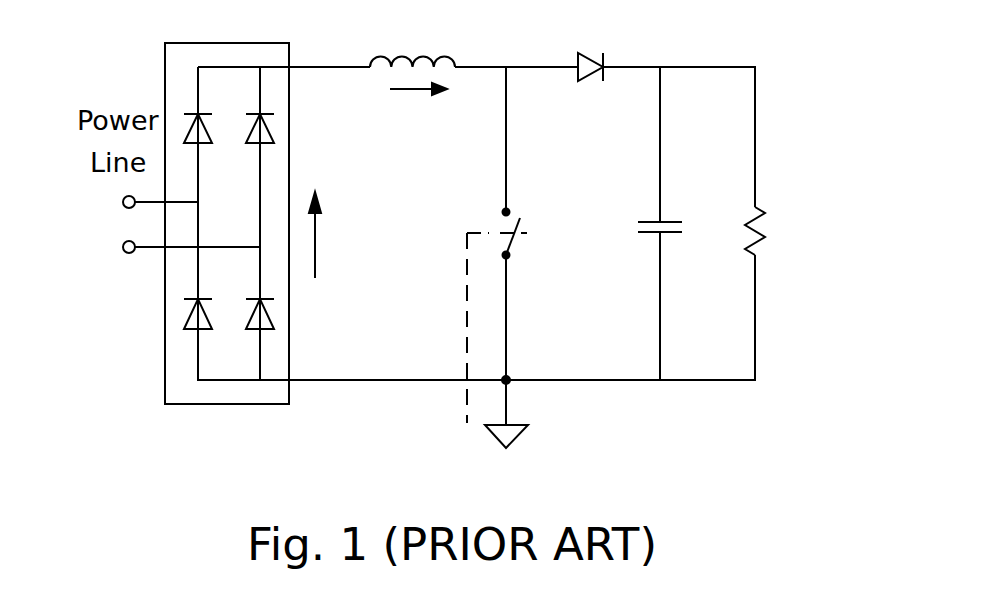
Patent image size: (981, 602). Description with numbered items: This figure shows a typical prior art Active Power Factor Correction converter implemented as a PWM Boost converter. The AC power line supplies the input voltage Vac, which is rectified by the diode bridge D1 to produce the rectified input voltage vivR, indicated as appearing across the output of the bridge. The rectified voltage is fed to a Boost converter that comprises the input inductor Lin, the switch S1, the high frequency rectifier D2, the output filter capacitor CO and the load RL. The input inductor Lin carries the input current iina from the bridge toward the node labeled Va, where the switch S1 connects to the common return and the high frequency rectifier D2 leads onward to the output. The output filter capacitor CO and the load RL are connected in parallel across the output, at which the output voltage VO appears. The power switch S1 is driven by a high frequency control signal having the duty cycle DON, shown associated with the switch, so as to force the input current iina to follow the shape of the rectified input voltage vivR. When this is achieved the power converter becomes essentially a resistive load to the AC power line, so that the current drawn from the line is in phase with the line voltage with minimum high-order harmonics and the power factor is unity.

The diode bridge D1 is at (227, 250).
The high frequency rectifier D2 is at (593, 42).
The input inductor Lin is at (412, 33).
The switch S1 is at (527, 281).
The output filter capacitor CO is at (641, 223).
The load RL is at (778, 237).
The duty cycle DON is at (474, 353).
The node voltage Va is at (493, 114).
The output voltage VO is at (697, 34).
The input voltage Vac is at (91, 243).
The input current iina is at (418, 114).
The rectified input voltage vivR is at (344, 235).